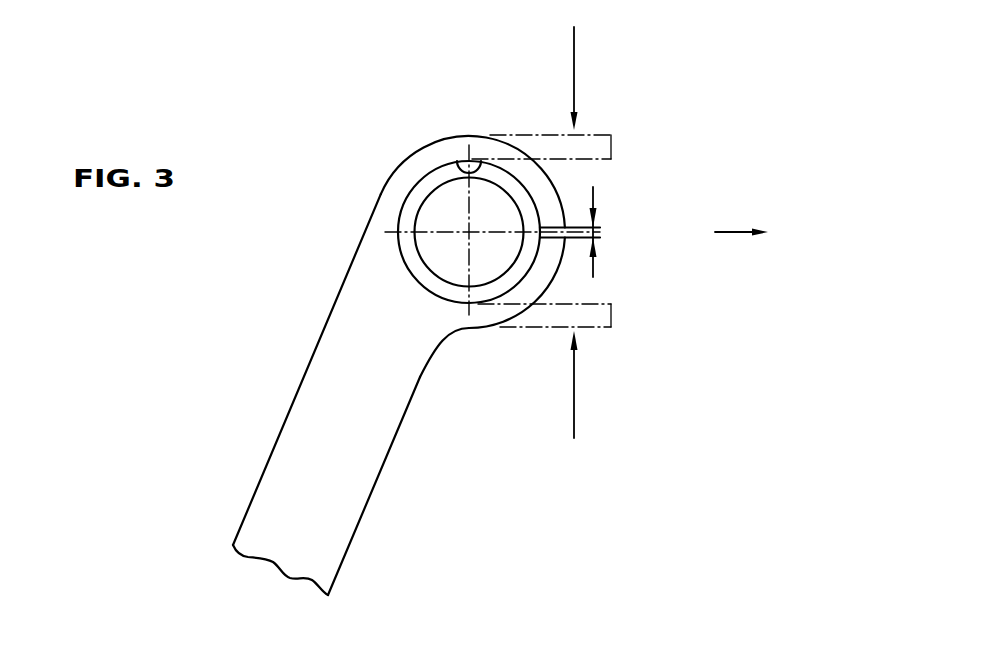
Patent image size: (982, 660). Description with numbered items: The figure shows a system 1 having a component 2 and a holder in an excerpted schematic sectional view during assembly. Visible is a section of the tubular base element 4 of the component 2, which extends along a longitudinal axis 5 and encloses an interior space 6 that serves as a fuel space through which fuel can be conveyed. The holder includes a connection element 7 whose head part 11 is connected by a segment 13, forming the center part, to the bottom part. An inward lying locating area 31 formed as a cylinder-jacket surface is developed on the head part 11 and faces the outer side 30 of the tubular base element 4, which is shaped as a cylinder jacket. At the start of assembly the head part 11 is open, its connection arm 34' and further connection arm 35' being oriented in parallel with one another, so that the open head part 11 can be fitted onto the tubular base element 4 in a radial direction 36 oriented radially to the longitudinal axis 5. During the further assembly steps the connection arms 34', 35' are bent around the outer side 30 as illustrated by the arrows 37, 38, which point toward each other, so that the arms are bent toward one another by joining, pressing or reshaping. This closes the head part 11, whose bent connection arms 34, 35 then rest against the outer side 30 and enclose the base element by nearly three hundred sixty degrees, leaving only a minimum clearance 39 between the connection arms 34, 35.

The system 1 is at (706, 52).
The component 2 is at (425, 222).
The tubular base element 4 is at (428, 183).
The longitudinal axis 5 is at (428, 262).
The interior space 6 is at (402, 234).
The connection element 7 is at (327, 394).
The head part 11 is at (435, 154).
The segment 13 is at (343, 490).
The outer side 30 is at (430, 296).
The locating area 31 is at (476, 169).
The bent connection arm 34 is at (595, 196).
The bent connection arm 35 is at (596, 271).
The connection arm 34' is at (580, 144).
The further connection arm 35' is at (583, 317).
The radial direction 36 is at (738, 232).
The arrow 37 is at (576, 72).
The arrow 38 is at (576, 388).
The clearance 39 is at (596, 232).